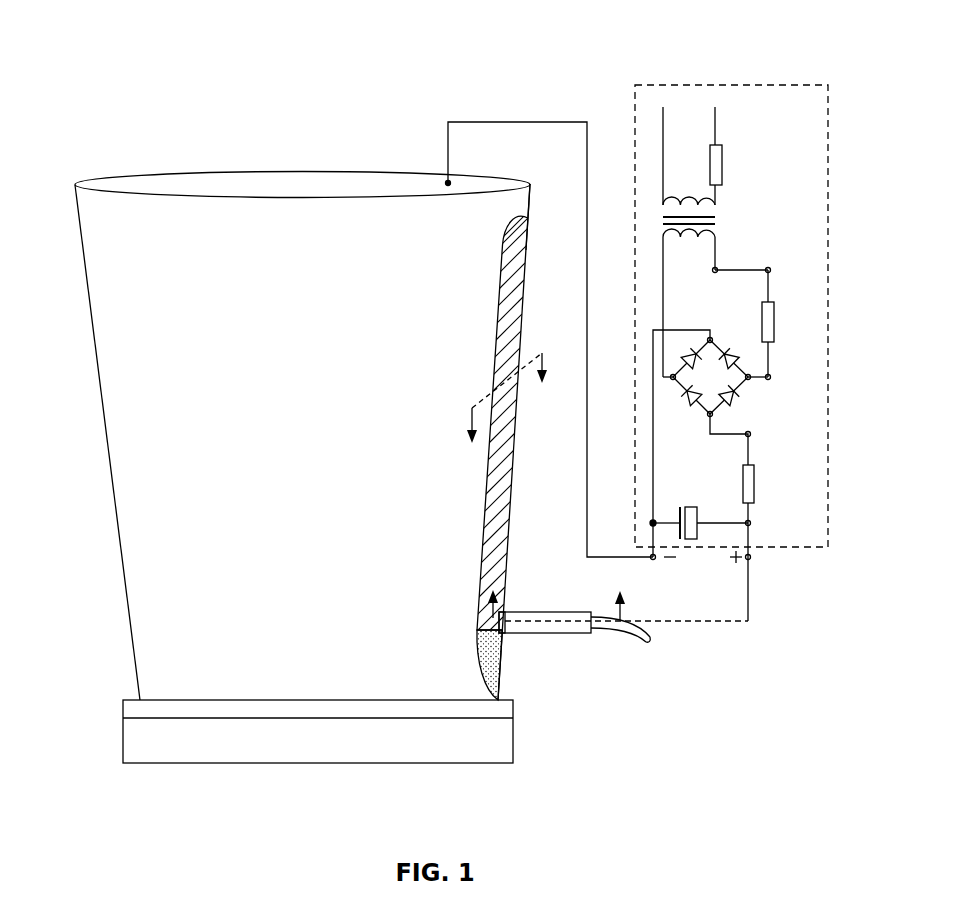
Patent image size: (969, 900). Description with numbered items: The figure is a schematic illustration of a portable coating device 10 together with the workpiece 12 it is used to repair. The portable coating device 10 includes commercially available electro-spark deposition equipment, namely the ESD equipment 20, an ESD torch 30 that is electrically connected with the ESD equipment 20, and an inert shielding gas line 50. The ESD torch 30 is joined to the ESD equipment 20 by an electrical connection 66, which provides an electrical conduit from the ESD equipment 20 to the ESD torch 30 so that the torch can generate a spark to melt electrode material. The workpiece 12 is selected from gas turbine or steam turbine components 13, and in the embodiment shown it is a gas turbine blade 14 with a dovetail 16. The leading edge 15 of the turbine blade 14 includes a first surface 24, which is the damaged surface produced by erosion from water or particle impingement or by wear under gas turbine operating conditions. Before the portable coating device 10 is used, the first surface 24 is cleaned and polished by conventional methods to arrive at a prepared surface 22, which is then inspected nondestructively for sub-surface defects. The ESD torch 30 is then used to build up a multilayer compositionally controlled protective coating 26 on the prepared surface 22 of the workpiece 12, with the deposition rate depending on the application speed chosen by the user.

The portable coating device 10 is at (743, 50).
The workpiece 12 is at (304, 145).
The gas turbine or steam turbine components 13 is at (157, 160).
The gas turbine blade 14 is at (130, 436).
The leading edge 15 is at (519, 197).
The dovetail 16 is at (228, 745).
The electro-spark deposition (ESD) equipment 20 is at (815, 180).
The prepared surface 22 is at (500, 518).
The first surface 24 is at (533, 208).
The compositionally controlled protective coating 26 is at (505, 652).
The ESD torch 30 is at (566, 633).
The inert shielding gas line 50 is at (652, 641).
The electrical connection 66 is at (727, 622).